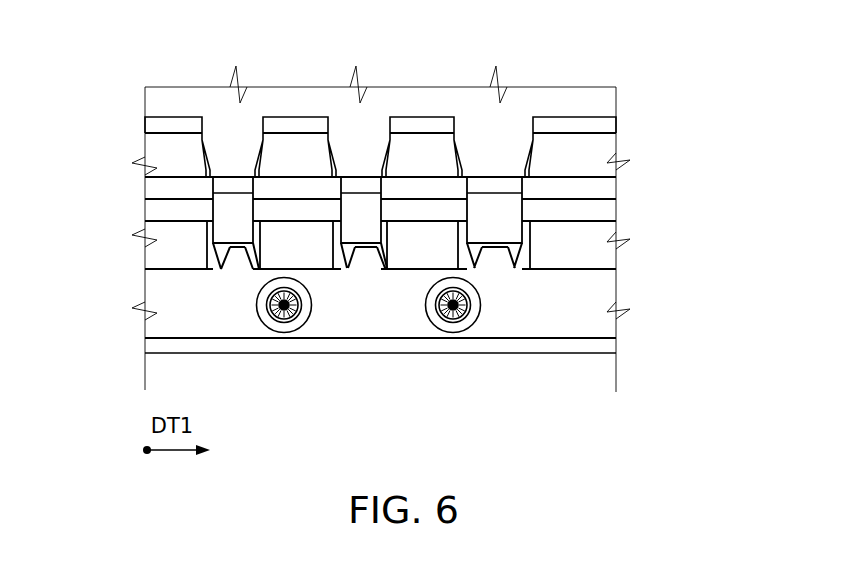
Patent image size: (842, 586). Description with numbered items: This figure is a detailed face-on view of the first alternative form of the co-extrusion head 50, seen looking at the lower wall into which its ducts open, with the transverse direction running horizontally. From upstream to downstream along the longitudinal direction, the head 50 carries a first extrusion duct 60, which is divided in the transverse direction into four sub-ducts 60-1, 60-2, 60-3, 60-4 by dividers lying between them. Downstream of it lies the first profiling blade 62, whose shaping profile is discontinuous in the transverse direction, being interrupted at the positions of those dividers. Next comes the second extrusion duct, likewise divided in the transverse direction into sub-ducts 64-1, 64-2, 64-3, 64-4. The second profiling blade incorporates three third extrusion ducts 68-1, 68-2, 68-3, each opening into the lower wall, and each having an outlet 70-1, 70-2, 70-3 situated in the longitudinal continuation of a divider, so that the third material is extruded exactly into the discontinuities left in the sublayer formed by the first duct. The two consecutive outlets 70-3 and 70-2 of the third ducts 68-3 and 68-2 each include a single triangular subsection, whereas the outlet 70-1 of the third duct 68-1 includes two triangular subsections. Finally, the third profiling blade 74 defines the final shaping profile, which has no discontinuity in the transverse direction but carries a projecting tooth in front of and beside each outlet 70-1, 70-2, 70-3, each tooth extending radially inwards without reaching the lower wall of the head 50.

The co-extrusion head 50 is at (548, 372).
The first extrusion duct 60 is at (606, 149).
The sub-duct of the first extrusion duct 60-1 is at (582, 124).
The sub-duct of the first extrusion duct 60-2 is at (423, 124).
The sub-duct of the first extrusion duct 60-3 is at (291, 124).
The sub-duct of the first extrusion duct 60-4 is at (160, 124).
The first profiling blade 62 is at (600, 187).
The sub-duct of the second extrusion duct 64-1 is at (606, 233).
The sub-duct of the second extrusion duct 64-2 is at (414, 268).
The sub-duct of the second extrusion duct 64-3 is at (315, 272).
The sub-duct of the second extrusion duct 64-4 is at (146, 259).
The third extrusion duct 68-1 is at (502, 228).
The third extrusion duct 68-2 is at (365, 228).
The third extrusion duct 68-3 is at (237, 228).
The outlet of the third duct 70-1 is at (513, 270).
The outlet of the third duct 70-2 is at (348, 269).
The outlet of the third duct 70-3 is at (220, 269).
The third profiling blade 74 is at (598, 288).